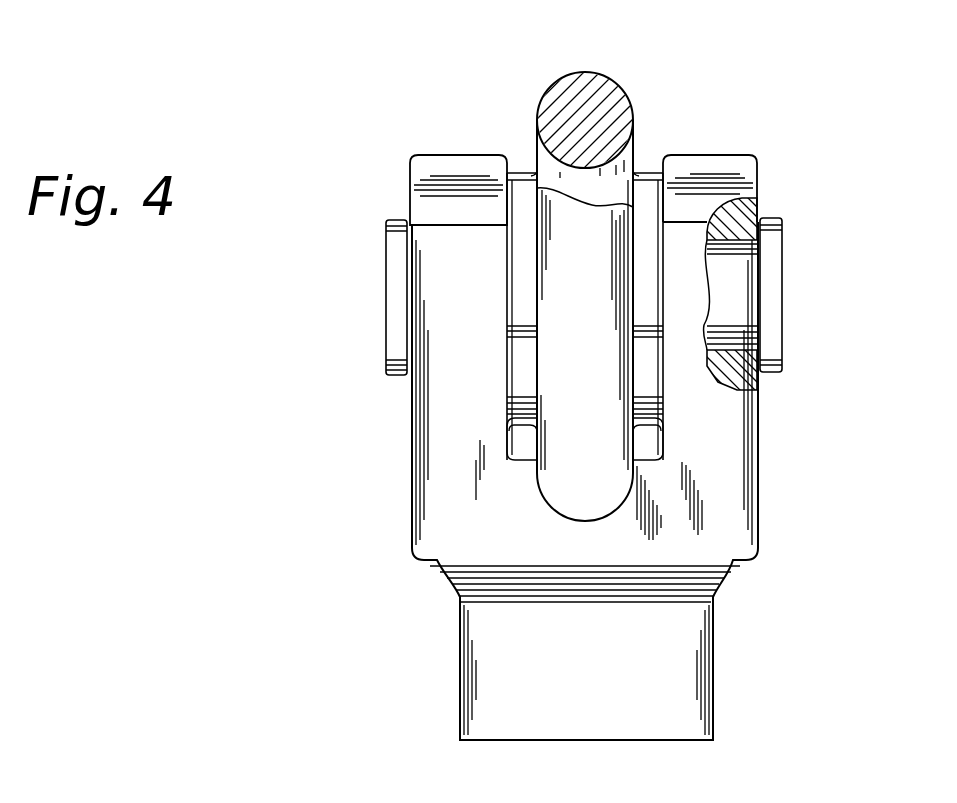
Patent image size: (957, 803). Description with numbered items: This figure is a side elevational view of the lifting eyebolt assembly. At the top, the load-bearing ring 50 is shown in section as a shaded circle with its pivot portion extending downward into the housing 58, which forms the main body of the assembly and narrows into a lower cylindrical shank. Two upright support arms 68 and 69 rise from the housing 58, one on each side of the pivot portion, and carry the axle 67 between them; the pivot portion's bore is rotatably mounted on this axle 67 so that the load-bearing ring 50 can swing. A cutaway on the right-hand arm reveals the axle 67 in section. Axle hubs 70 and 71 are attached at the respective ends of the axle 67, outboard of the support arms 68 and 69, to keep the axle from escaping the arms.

The load-bearing ring 50 is at (600, 74).
The housing 58 is at (758, 528).
The axle 67 is at (740, 378).
The upright support arm 68 is at (717, 155).
The upright support arm 69 is at (458, 155).
The axle hub 70 is at (783, 232).
The axle hub 71 is at (393, 375).